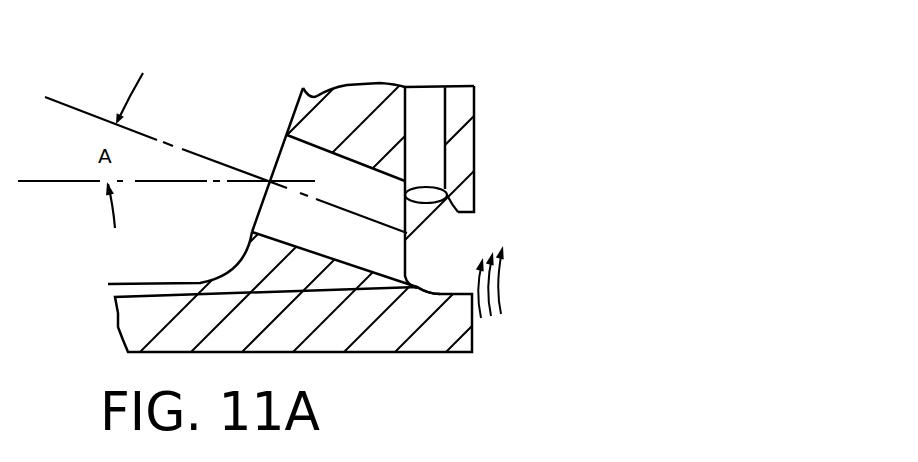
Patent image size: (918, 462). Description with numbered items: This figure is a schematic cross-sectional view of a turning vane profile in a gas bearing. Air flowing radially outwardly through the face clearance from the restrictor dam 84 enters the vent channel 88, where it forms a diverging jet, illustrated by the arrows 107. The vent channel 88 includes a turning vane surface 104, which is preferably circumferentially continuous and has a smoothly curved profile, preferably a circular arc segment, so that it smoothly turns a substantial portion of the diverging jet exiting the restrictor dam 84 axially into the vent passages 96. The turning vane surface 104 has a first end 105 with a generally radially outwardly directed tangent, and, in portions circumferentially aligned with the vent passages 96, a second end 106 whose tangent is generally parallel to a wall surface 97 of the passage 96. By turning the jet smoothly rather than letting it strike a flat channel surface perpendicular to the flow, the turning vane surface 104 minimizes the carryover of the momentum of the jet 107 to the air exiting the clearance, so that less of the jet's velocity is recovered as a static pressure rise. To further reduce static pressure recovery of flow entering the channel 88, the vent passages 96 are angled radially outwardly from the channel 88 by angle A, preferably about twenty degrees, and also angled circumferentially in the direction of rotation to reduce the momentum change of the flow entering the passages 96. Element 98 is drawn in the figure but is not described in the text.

The restrictor dam 84 is at (472, 342).
The vent channel 88 is at (421, 285).
The vent passages 96 is at (265, 208).
The wall surface 97 is at (318, 142).
The pin 98 is at (408, 110).
The turning vane surface 104 is at (402, 237).
The first end 105 is at (458, 200).
The second end 106 is at (405, 198).
The arrows 107 is at (503, 286).